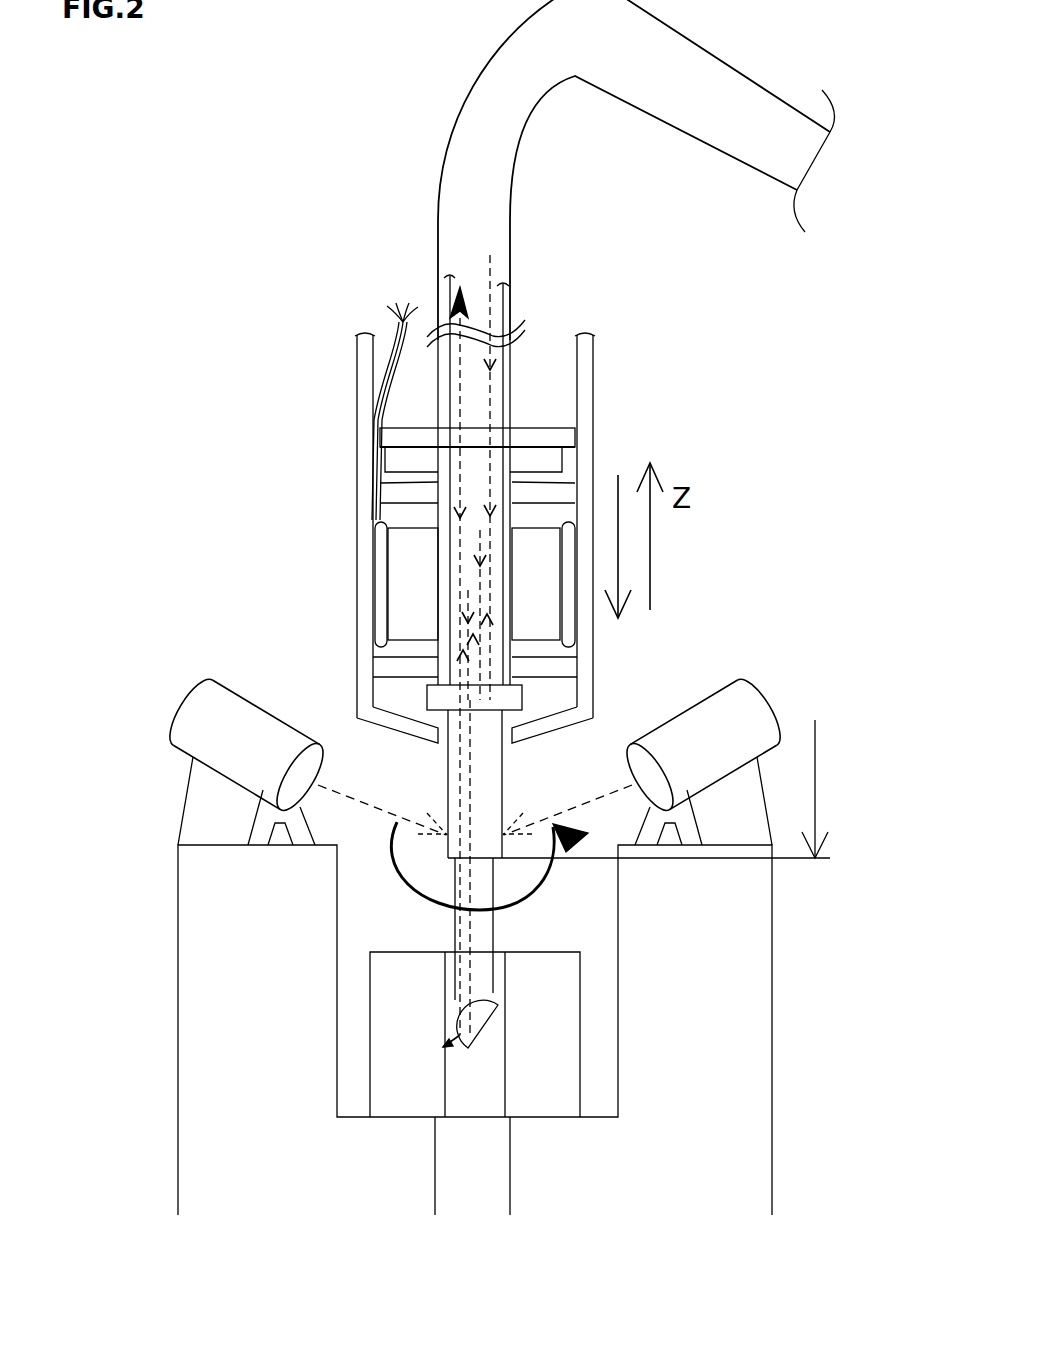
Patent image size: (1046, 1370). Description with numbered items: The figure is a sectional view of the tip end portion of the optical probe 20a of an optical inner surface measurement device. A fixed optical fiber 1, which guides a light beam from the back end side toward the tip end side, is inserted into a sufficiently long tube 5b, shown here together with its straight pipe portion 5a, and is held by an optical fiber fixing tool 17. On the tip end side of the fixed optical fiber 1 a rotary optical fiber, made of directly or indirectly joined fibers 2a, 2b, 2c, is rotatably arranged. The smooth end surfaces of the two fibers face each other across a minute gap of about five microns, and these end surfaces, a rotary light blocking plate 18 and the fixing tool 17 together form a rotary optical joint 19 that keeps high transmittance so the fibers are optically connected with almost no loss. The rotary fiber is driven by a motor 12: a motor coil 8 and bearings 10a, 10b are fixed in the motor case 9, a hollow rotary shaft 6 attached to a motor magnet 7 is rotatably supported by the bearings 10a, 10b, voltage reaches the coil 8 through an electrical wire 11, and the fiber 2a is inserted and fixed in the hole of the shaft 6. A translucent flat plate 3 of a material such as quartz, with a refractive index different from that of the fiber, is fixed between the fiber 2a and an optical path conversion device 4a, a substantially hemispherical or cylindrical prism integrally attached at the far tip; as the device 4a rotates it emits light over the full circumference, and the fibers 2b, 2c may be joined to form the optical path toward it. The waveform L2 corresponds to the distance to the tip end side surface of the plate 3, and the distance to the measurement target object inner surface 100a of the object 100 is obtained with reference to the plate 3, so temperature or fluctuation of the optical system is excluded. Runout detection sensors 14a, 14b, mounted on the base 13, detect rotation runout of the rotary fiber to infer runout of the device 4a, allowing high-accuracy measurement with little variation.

The fixed optical fiber 1 is at (475, 285).
The rotary optical fiber 2a is at (460, 583).
The rotary optical fiber 2b is at (490, 773).
The rotary optical fiber 2c is at (482, 932).
The translucent flat plate 3 is at (505, 697).
The optical path conversion device 4a is at (483, 1012).
The outer pipe 5a is at (510, 302).
The tube 5b is at (513, 138).
The hollow rotary shaft 6 is at (438, 515).
The motor magnet 7 is at (415, 545).
The motor coil 8 is at (373, 567).
The motor case 9 is at (360, 630).
The bearing 10a is at (373, 672).
The bearing 10b is at (417, 492).
The electrical wire 11 is at (403, 322).
The motor 12 is at (459, 396).
The base block 13 is at (243, 997).
The runout detection sensor 14a is at (218, 742).
The runout detection sensor 14b is at (742, 705).
The optical fiber fixing tool 17 is at (558, 430).
The rotary light blocking plate 18 is at (537, 460).
The rotary optical joint 19 is at (600, 415).
The optical probe 20a is at (248, 246).
The container 100 is at (322, 1053).
The measurement target object inner surface 100a is at (443, 1085).
The acquired waveform L2 is at (828, 787).